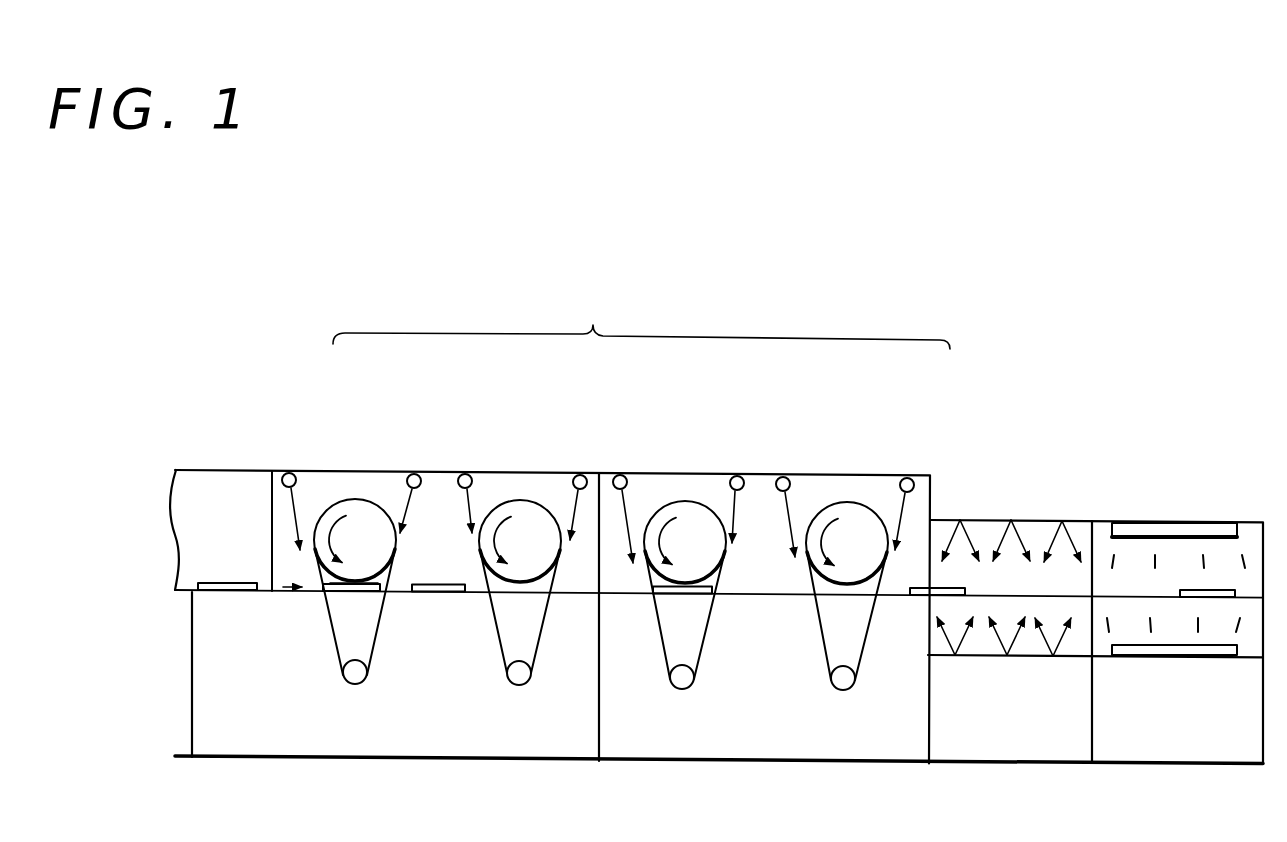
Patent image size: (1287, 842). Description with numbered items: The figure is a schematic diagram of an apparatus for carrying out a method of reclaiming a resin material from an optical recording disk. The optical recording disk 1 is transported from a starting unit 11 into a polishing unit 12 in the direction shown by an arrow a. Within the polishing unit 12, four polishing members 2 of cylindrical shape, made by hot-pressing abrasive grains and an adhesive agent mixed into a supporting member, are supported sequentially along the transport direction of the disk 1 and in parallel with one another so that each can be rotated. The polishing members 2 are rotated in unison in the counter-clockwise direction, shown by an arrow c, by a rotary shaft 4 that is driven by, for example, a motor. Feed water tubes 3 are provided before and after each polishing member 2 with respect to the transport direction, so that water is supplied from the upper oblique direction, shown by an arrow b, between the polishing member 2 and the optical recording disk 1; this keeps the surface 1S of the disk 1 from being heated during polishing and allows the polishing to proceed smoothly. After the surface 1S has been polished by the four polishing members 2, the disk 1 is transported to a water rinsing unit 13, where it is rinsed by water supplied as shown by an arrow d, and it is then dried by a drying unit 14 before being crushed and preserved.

The optical recording disk 1 is at (223, 586).
The surface 1S is at (366, 582).
The polishing member 2 is at (507, 576).
The feed water tube 3 is at (290, 467).
The rotary shaft 4 is at (519, 675).
The starting unit 11 is at (217, 493).
The polishing unit 12 is at (641, 319).
The water rinsing unit 13 is at (1040, 533).
The drying unit 14 is at (1248, 530).
The arrow a is at (273, 597).
The arrow b is at (573, 507).
The arrow c is at (340, 516).
The arrow d is at (1017, 520).